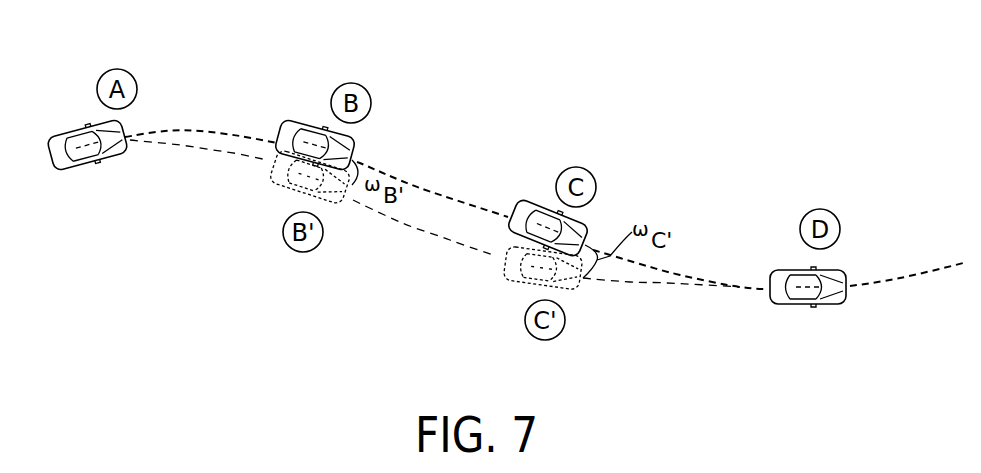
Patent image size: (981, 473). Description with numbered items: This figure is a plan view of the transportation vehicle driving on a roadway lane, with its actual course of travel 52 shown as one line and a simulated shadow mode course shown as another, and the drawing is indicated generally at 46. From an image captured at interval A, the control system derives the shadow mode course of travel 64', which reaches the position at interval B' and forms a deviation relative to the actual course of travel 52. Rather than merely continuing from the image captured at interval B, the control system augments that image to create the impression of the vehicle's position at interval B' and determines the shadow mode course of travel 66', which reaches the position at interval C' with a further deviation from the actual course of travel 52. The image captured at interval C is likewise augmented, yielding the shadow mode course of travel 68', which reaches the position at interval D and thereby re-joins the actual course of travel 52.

The vehicle travel scenario / path indicator 46 is at (193, 96).
The actual course of travel 52 is at (218, 133).
The shadow mode course of travel 64' is at (199, 181).
The shadow mode course of travel 66' is at (424, 251).
The shadow mode course of travel 68' is at (661, 321).